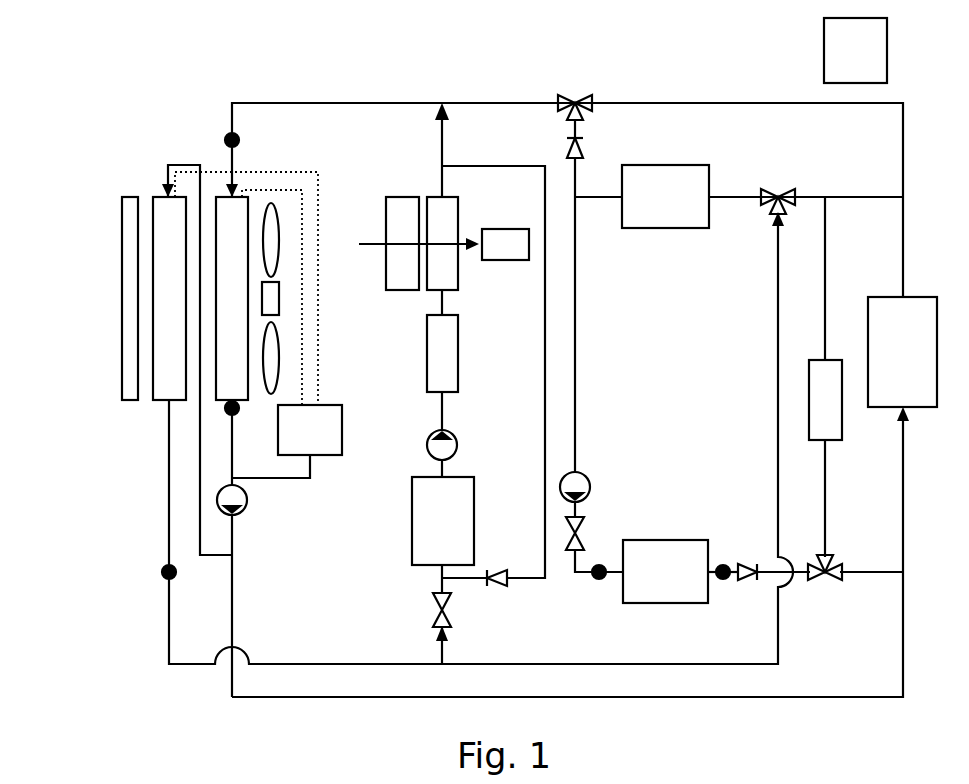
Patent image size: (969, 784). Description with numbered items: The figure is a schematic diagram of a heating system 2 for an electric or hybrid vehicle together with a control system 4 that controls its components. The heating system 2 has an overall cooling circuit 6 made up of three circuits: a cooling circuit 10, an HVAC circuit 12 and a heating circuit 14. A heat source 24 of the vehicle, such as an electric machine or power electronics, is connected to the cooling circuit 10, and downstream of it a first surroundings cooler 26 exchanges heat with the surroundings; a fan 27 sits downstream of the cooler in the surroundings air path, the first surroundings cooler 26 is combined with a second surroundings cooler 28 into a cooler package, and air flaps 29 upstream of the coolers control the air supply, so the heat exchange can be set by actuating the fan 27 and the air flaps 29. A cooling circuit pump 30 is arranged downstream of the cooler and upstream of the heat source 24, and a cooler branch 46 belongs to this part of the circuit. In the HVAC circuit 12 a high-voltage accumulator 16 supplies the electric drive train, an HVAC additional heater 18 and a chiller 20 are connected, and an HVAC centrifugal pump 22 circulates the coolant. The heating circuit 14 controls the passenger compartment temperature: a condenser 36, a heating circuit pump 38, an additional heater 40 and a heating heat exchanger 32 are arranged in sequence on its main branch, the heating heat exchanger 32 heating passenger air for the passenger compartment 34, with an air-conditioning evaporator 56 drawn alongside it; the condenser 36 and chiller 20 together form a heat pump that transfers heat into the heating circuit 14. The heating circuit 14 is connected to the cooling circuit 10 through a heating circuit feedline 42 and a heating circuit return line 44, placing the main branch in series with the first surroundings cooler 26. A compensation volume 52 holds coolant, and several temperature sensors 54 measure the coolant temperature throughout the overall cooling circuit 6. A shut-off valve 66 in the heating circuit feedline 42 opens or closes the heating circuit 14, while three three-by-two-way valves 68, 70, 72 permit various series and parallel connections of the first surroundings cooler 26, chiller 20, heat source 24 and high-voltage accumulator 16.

The heating system 2 is at (120, 48).
The control system 4 is at (855, 50).
The overall cooling circuit 6 is at (284, 66).
The cooling circuit 10 is at (373, 101).
The HVAC circuit 12 is at (578, 366).
The heating circuit 14 is at (545, 415).
The high-voltage accumulator 16 is at (690, 571).
The HVAC additional heater 18 is at (833, 440).
The chiller 20 is at (739, 196).
The HVAC centrifugal pump 22 is at (590, 488).
The heat source 24 is at (902, 352).
The first surroundings cooler 26 is at (215, 218).
The fan 27 is at (264, 284).
The second surroundings cooler 28 is at (152, 302).
The air flaps 29 is at (122, 355).
The cooling circuit pump 30 is at (248, 500).
The heating heat exchanger 32 is at (460, 268).
The passenger compartment 34 is at (444, 244).
The condenser 36 is at (443, 535).
The heating circuit pump 38 is at (427, 440).
The additional heater 40 is at (426, 360).
The heating circuit feedline 42 is at (440, 650).
The heating circuit return line 44 is at (437, 137).
The cooler branch 46 is at (235, 556).
The compensation volume 52 is at (287, 441).
The temperature sensor 54 is at (224, 140).
The air-conditioning evaporator 56 is at (385, 228).
The shut-off valve 66 is at (422, 610).
The 3/2-way valve 68 is at (845, 553).
The 3/2-way valve 70 is at (571, 84).
The 3/2-way valve 72 is at (782, 172).